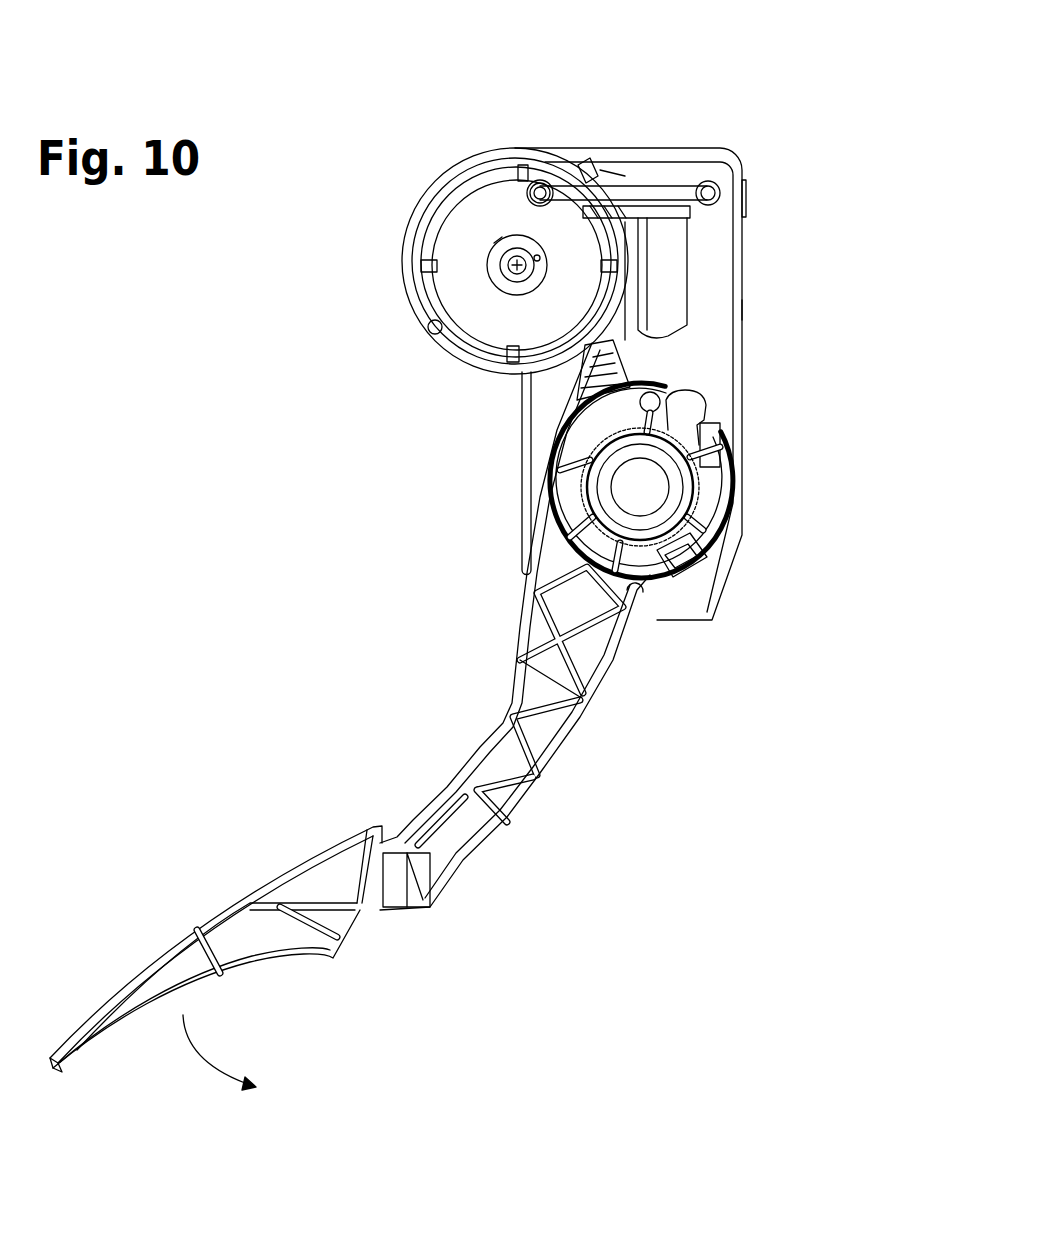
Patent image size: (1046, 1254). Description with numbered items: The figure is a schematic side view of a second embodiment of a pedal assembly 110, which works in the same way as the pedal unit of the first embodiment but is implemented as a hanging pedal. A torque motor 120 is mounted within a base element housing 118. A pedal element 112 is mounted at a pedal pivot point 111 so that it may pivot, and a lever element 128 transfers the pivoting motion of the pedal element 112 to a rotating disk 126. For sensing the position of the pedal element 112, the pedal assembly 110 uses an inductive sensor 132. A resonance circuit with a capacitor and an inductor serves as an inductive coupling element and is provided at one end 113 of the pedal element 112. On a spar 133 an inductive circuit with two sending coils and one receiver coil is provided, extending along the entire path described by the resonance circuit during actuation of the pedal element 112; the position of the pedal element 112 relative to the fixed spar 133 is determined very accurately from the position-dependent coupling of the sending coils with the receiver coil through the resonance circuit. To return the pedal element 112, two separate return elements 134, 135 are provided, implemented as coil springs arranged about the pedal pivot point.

The pedal assembly 110 is at (200, 306).
The pivot shaft 111 is at (637, 490).
The pedal element 112 is at (573, 743).
The end of the pedal element 113 is at (713, 170).
The base element housing 118 is at (668, 150).
The torque motor 120 is at (445, 185).
The rotating disk 126 is at (458, 285).
The lever element 128 is at (585, 165).
The inductive sensor 132 is at (810, 133).
The spar 133 is at (670, 216).
The return element 134 is at (535, 480).
The return element 135 is at (560, 436).